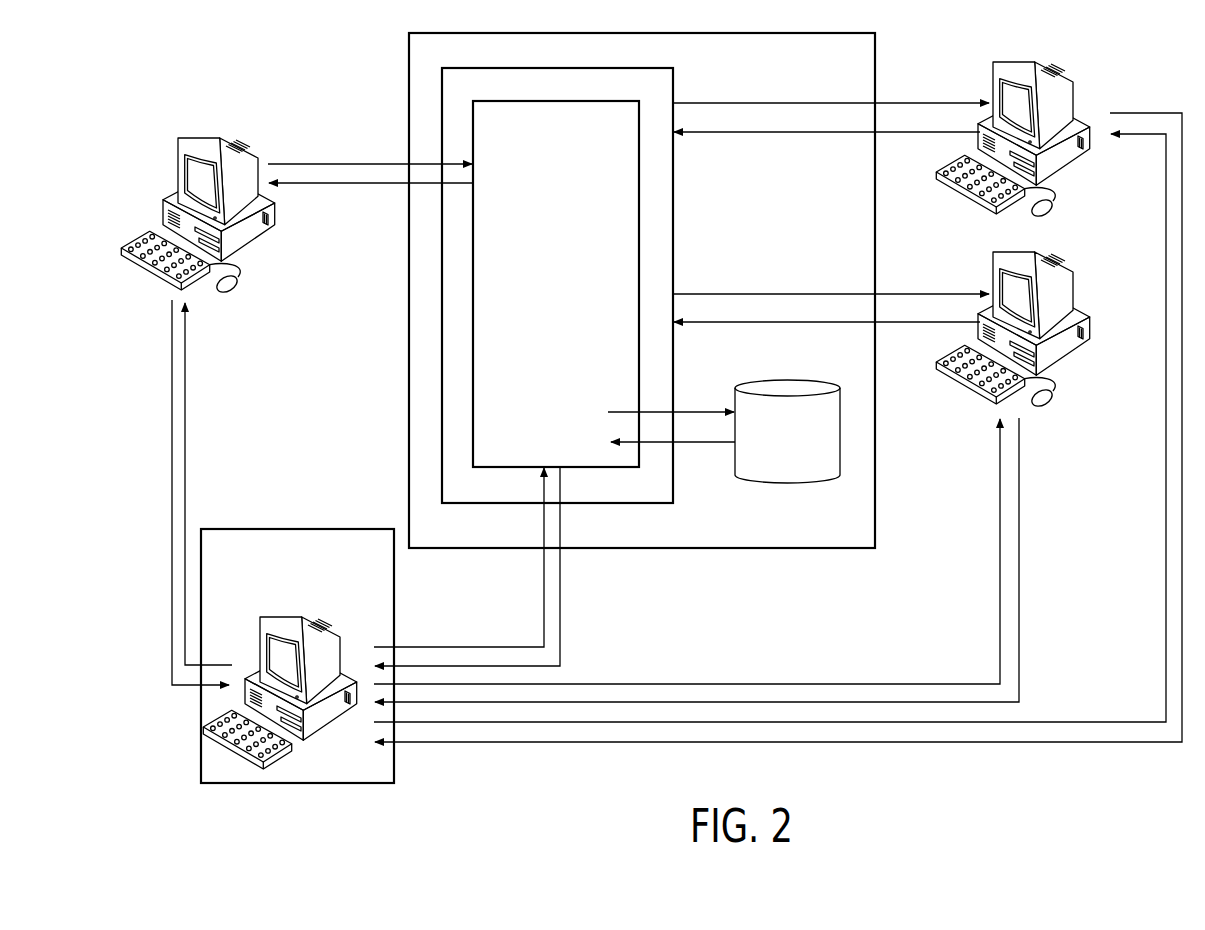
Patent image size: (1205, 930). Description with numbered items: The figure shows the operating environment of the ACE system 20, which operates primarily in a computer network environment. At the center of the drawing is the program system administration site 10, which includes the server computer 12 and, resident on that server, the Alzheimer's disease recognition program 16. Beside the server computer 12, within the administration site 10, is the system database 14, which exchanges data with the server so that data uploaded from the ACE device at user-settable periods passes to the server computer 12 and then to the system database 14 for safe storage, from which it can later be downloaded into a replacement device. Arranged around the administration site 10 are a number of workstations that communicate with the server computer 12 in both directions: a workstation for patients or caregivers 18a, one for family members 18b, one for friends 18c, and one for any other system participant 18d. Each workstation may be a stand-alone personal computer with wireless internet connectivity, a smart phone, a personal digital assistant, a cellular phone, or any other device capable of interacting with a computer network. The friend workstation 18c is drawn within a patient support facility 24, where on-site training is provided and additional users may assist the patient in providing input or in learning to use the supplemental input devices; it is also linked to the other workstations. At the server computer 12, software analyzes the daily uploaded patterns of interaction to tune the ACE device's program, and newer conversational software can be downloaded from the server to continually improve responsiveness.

The program system administration site 10 is at (409, 62).
The server computer 12 is at (673, 203).
The system database 14 is at (818, 482).
The Alzheimer's disease recognition program 16 is at (547, 296).
The patient/caregiver workstation 18a is at (237, 145).
The family member workstation 18b is at (1067, 82).
The friend workstation 18c is at (323, 632).
The other system participant workstation 18d is at (1067, 272).
The ACE system 20 is at (324, 411).
The patient support facility 24 is at (295, 528).